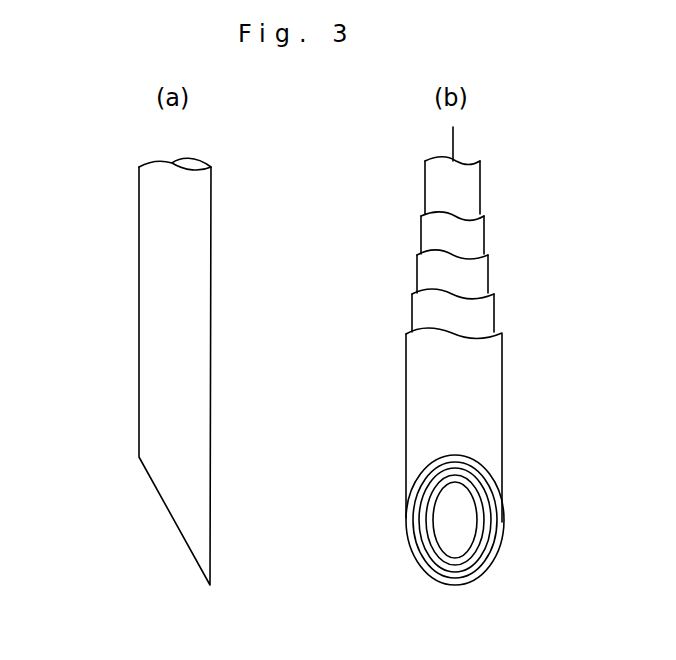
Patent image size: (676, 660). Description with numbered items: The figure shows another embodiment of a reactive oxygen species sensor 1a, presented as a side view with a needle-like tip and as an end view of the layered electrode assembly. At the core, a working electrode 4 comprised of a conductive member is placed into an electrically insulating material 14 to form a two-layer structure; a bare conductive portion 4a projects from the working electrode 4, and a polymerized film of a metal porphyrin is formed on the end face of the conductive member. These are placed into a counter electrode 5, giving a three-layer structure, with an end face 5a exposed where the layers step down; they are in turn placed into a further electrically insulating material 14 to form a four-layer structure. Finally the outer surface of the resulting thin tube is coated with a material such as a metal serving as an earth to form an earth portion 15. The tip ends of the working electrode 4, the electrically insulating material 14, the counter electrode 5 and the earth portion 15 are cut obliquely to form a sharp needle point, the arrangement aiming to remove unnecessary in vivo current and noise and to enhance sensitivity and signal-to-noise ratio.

The reactive oxygen species sensor 1a is at (118, 203).
The working electrode 4 is at (463, 188).
The bare optical fiber (glass fiber) 4a is at (453, 142).
The counter electrode 5 is at (477, 279).
The coating layer end face 5a is at (425, 275).
The electrically insulating material 14 is at (472, 240).
The earth portion 15 is at (485, 406).